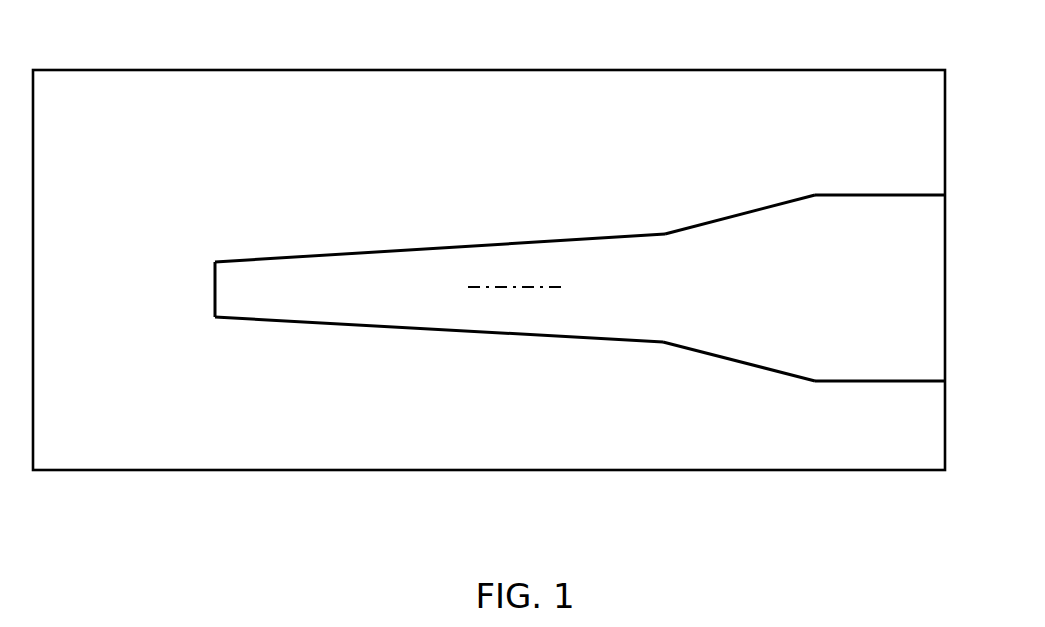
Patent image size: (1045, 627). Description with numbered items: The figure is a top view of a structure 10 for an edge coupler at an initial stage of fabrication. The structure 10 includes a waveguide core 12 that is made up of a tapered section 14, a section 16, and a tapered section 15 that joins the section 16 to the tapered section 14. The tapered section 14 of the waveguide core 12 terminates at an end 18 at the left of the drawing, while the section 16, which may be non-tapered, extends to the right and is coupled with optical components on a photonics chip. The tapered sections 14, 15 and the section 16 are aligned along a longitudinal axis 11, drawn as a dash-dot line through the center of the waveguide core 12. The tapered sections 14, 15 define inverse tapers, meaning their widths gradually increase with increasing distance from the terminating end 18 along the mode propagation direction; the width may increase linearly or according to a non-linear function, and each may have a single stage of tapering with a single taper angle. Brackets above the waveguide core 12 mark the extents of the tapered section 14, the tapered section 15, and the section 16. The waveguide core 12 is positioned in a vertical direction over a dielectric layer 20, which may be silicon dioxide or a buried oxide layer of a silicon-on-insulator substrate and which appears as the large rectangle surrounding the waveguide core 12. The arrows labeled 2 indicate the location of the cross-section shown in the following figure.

The section line 2- 2 is at (413, 29).
The structure 10 is at (116, 46).
The longitudinal axis 11 is at (507, 287).
The waveguide core 12 is at (529, 253).
The tapered section 14 is at (217, 143).
The tapered section 15 is at (811, 165).
The section 16 is at (943, 140).
The end 18 is at (215, 289).
The dielectric layer 20 is at (887, 458).